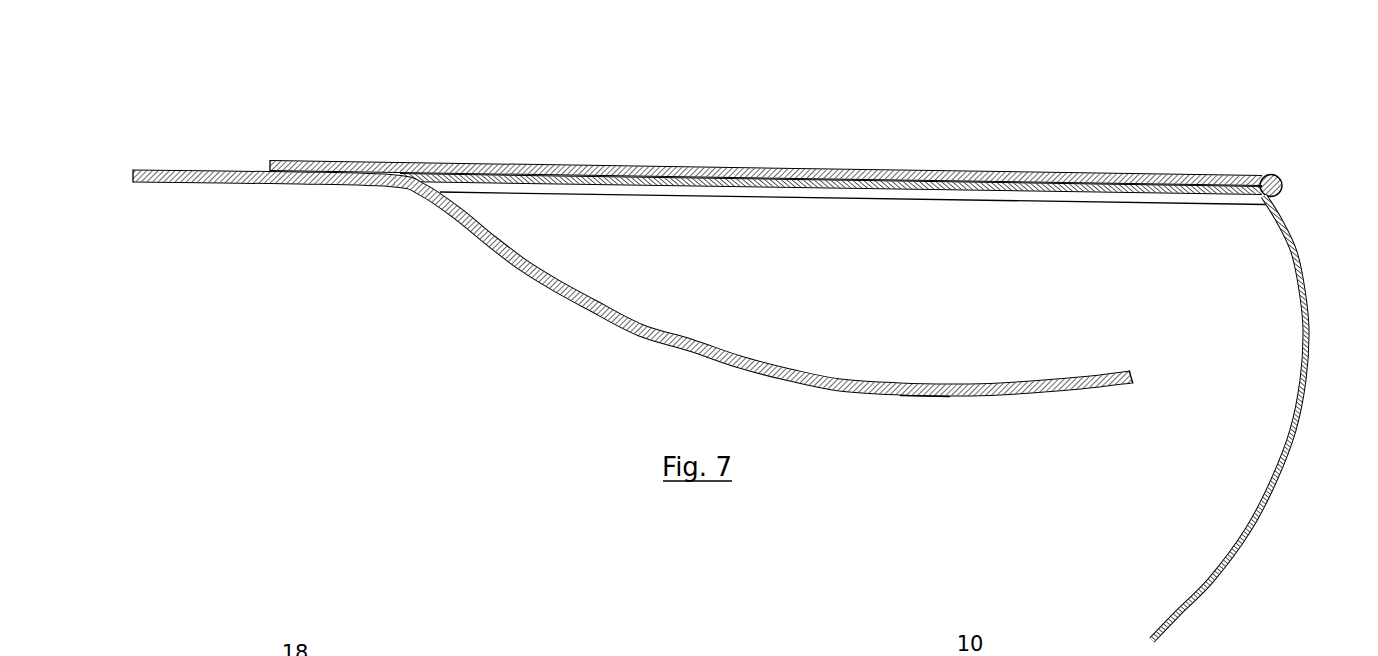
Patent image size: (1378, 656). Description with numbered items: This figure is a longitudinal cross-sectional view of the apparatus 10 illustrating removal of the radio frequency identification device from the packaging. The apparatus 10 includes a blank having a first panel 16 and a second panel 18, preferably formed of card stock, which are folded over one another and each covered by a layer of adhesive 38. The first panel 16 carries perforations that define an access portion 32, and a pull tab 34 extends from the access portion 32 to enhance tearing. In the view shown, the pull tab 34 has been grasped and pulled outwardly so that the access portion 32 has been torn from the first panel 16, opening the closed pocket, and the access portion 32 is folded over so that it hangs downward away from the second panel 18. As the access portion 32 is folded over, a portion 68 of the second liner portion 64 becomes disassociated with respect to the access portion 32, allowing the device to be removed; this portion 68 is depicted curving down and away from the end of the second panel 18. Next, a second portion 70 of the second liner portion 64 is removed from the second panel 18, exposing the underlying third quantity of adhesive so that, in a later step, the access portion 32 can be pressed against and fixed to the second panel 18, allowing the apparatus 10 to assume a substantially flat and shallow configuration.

The apparatus 10 is at (1108, 147).
The first panel 16 is at (202, 184).
The second panel 18 is at (308, 160).
The access portion 32 is at (620, 327).
The pull tab 34 is at (1137, 384).
The layer of adhesive 38 is at (936, 396).
The second liner portion 64 is at (1313, 267).
The portion of the second liner portion 68 is at (1237, 527).
The second portion of the second liner portion 70 is at (748, 168).